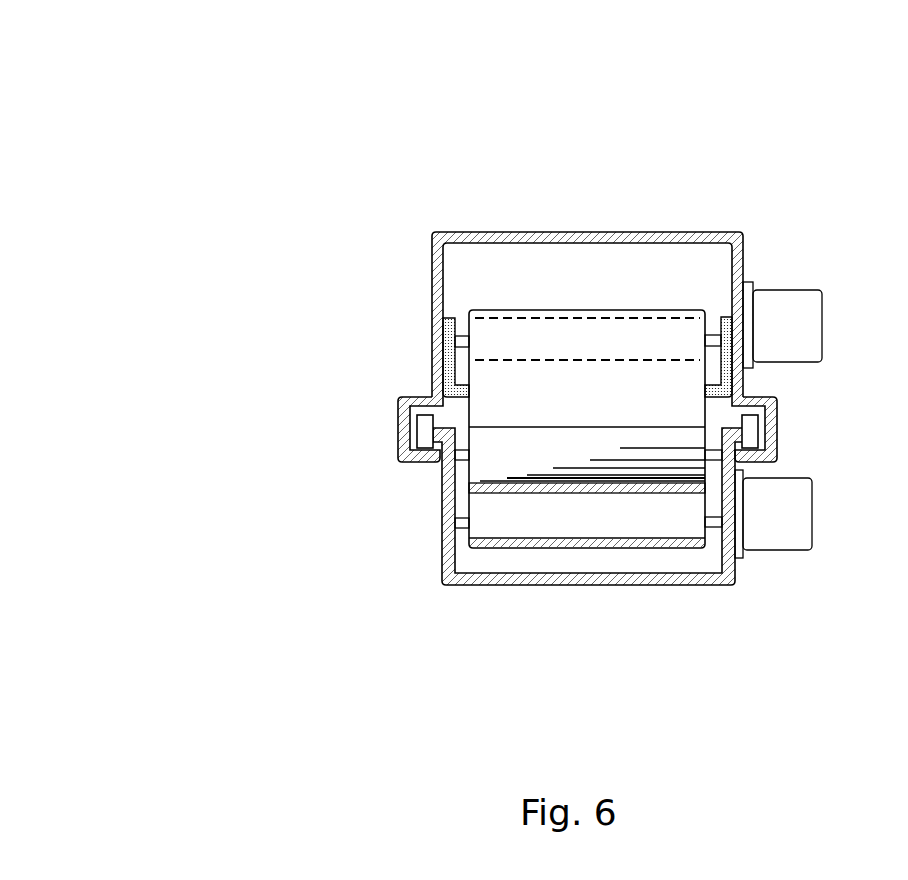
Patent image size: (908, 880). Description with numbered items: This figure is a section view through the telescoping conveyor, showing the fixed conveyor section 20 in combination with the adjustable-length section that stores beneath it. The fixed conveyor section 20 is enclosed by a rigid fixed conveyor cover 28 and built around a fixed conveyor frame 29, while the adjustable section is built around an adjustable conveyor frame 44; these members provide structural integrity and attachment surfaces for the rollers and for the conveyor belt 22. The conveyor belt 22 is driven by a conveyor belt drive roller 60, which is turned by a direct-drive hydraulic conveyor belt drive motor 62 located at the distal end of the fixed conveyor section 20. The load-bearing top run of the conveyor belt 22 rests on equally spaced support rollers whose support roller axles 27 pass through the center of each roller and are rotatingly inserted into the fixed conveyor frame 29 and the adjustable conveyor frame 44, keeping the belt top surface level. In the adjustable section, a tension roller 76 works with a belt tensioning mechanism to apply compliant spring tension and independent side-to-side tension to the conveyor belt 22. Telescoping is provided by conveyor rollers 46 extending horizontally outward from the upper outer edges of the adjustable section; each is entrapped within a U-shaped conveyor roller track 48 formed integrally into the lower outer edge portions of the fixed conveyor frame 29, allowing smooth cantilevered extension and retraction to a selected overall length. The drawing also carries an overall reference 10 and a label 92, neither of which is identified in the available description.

The actuator assembly 10 is at (84, 109).
The fixed conveyor section 20 is at (523, 230).
The conveyor belt 22 is at (579, 410).
The support roller axles 27 is at (461, 341).
The fixed conveyor cover 28 is at (661, 232).
The fixed conveyor frame 29 is at (449, 364).
The adjustable conveyor frame 44 is at (442, 563).
The conveyor rollers 46 is at (424, 432).
The conveyor roller tracks 48 is at (406, 453).
The conveyor belt drive roller 60 is at (661, 360).
The direct-drive hydraulic conveyor belt drive motor 62 is at (817, 328).
The tension roller 76 is at (647, 542).
The connector 92 is at (813, 521).